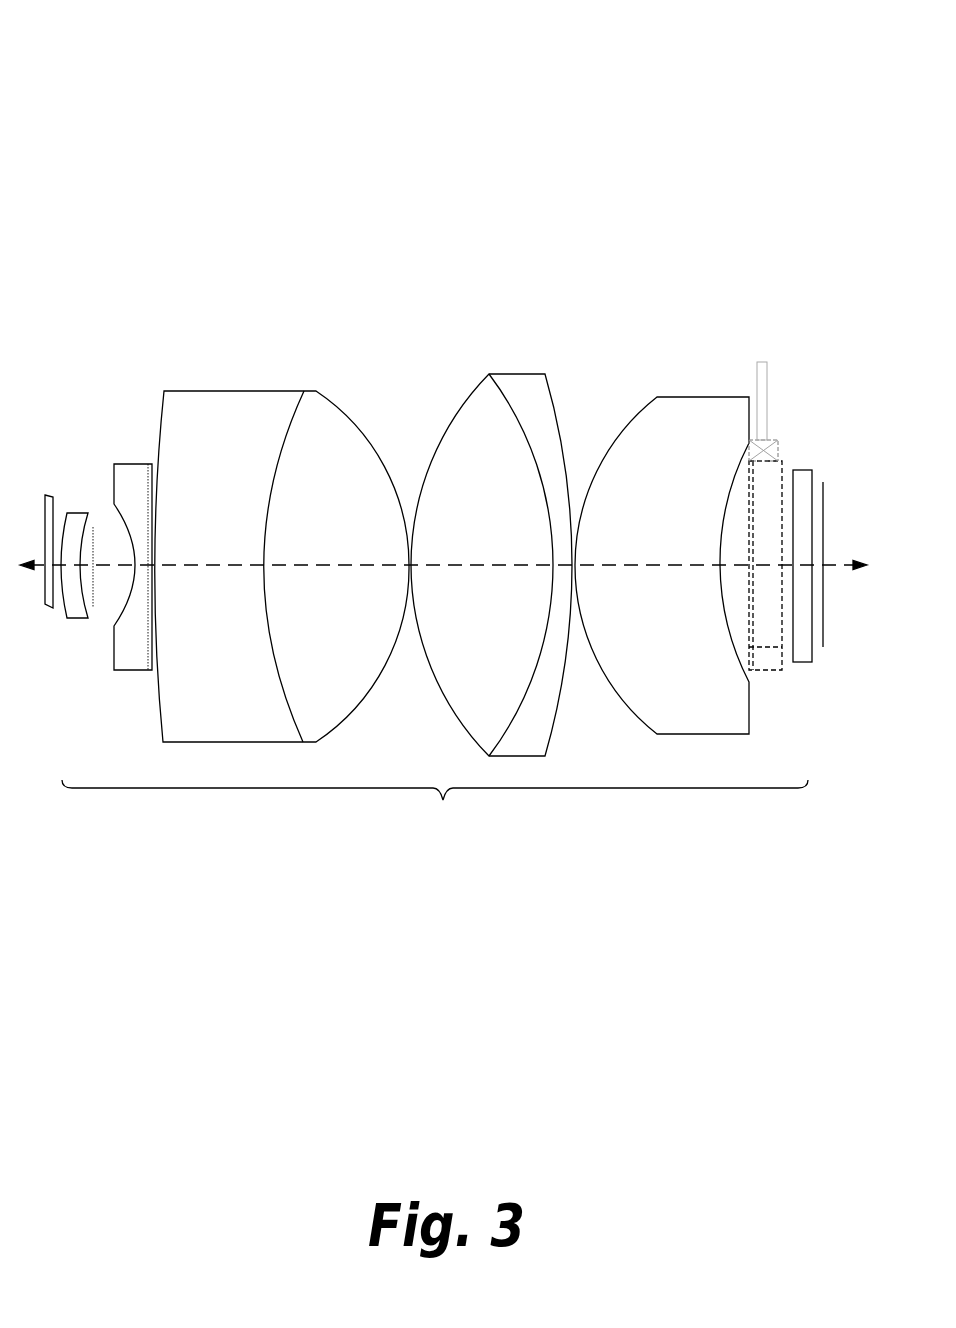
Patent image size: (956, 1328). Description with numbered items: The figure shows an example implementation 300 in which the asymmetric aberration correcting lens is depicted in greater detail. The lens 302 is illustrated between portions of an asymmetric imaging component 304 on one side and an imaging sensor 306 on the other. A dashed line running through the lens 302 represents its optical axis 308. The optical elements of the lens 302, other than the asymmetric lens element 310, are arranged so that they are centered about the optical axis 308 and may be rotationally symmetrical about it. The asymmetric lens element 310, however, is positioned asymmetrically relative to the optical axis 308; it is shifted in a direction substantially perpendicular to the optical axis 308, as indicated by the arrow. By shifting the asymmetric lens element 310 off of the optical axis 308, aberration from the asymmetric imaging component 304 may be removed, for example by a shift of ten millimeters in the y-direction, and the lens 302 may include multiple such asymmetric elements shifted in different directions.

The example implementation 300 is at (148, 59).
The lens 302 is at (463, 838).
The asymmetric imaging component 304 is at (50, 482).
The imaging sensor 306 is at (820, 470).
The optical axis 308 is at (340, 555).
The asymmetric lens element 310 is at (760, 488).